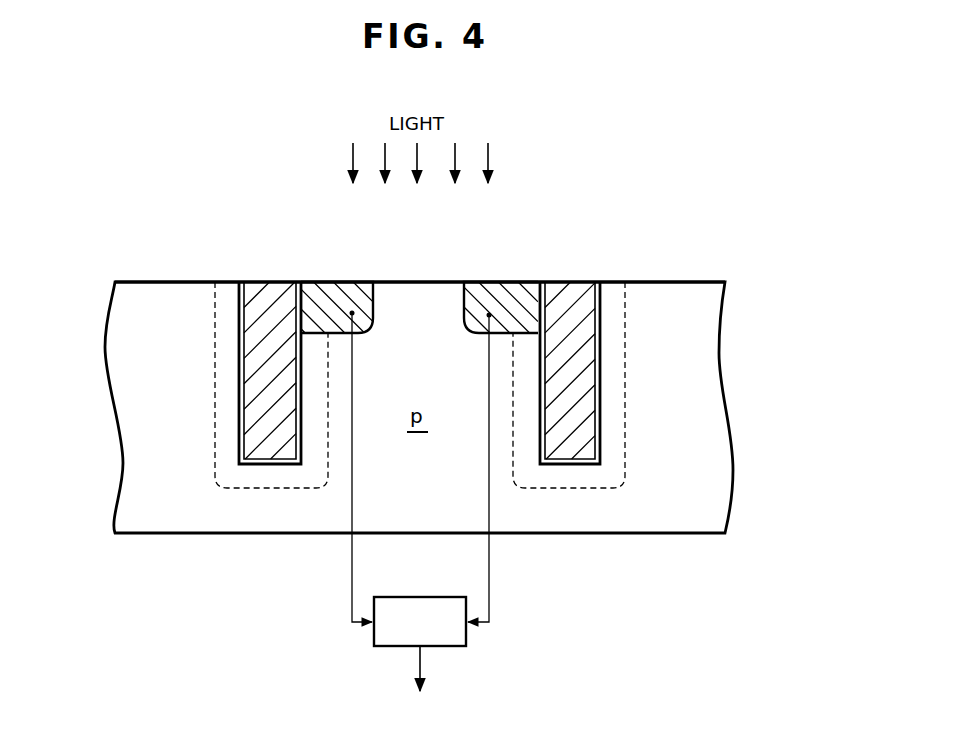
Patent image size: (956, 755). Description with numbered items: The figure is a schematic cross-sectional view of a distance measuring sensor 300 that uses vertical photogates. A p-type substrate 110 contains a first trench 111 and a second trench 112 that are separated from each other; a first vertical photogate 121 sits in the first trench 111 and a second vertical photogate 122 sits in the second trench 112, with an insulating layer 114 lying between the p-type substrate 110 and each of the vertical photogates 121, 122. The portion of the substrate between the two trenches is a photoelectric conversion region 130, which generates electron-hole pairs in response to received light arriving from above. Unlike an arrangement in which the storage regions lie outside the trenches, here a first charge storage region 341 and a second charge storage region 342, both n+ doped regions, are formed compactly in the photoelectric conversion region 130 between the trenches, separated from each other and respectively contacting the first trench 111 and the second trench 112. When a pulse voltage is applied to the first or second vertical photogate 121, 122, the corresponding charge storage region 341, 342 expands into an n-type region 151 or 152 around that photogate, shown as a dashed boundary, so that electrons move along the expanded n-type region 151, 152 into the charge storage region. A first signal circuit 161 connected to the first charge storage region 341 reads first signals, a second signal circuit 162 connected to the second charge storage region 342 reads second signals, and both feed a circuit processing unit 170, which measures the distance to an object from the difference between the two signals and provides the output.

The distance measuring sensor 300 is at (123, 226).
The p-type substrate 110 is at (722, 410).
The photoelectric conversion region 130 is at (413, 278).
The n-type region 151 is at (216, 289).
The n-type region 152 is at (617, 292).
The insulating layer 114 is at (241, 282).
The first vertical photogate 121 is at (272, 284).
The second vertical photogate 122 is at (566, 284).
The first trench 111 is at (301, 304).
The second trench 112 is at (540, 304).
The first charge storage region 341 is at (355, 282).
The second charge storage region 342 is at (481, 282).
The first signal circuit 161 is at (352, 586).
The second signal circuit 162 is at (489, 586).
The circuit processing unit 170 is at (420, 661).